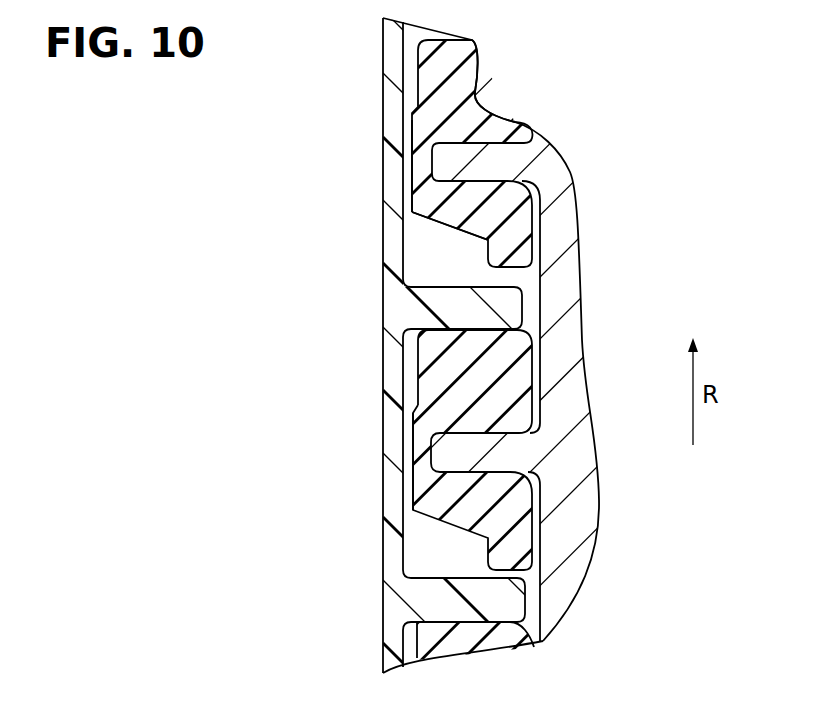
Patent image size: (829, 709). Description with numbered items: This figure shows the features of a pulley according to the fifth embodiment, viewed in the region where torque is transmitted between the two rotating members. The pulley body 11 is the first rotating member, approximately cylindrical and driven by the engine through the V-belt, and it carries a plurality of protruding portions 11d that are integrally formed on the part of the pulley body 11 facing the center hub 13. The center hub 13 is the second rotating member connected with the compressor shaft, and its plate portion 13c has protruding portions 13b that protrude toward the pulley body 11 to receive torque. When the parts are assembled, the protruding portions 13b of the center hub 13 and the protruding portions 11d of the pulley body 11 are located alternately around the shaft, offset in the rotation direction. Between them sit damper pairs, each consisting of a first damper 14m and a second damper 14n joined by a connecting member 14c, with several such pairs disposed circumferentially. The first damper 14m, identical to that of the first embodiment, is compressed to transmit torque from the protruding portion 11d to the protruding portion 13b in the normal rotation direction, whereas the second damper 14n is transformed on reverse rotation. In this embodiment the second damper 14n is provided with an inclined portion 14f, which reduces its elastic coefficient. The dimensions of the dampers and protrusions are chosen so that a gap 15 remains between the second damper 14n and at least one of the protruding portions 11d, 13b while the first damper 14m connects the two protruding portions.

The pulley body 11 is at (546, 141).
The protruding portions 11d is at (475, 163).
The center hub 13 is at (377, 528).
The protruding portions 13b is at (455, 307).
The plate portion 13c is at (400, 73).
The connecting member 14c is at (423, 167).
The inclined portion 14f is at (452, 249).
The first damper 14m is at (463, 82).
The second damper 14n is at (508, 230).
The gap 15 is at (490, 277).